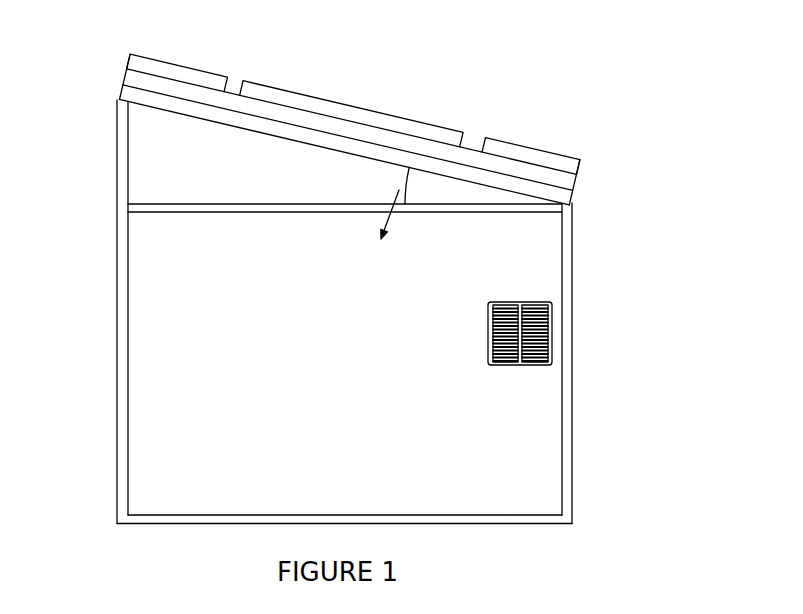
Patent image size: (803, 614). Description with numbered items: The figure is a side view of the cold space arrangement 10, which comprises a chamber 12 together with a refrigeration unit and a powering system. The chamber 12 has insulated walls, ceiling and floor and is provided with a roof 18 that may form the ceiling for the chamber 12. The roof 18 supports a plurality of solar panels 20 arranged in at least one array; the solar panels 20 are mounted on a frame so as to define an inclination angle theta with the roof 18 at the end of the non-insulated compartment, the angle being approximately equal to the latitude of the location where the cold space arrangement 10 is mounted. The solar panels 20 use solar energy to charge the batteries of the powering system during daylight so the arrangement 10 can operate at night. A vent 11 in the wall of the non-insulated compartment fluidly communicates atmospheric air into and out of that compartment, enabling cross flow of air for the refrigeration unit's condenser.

The cold space arrangement 10 is at (388, 269).
The vent 11 is at (548, 328).
The chamber 12 is at (572, 468).
The roof 18 is at (165, 202).
The solar panels 20 is at (487, 138).